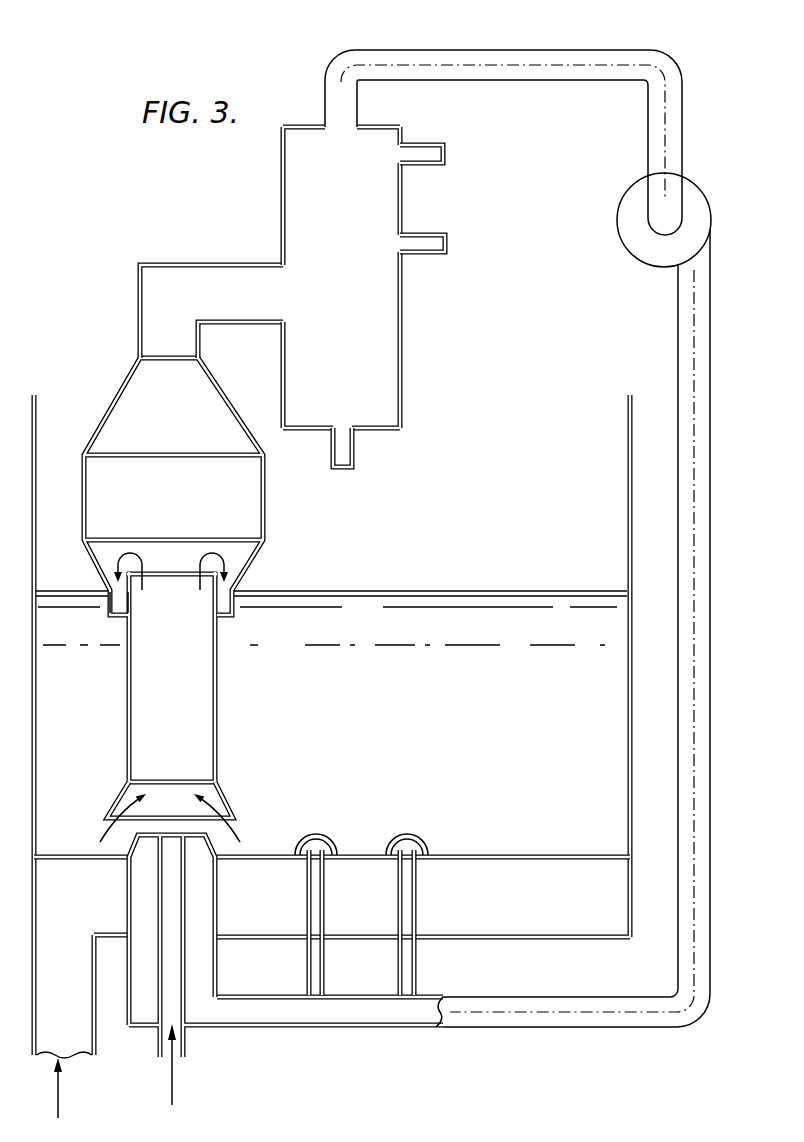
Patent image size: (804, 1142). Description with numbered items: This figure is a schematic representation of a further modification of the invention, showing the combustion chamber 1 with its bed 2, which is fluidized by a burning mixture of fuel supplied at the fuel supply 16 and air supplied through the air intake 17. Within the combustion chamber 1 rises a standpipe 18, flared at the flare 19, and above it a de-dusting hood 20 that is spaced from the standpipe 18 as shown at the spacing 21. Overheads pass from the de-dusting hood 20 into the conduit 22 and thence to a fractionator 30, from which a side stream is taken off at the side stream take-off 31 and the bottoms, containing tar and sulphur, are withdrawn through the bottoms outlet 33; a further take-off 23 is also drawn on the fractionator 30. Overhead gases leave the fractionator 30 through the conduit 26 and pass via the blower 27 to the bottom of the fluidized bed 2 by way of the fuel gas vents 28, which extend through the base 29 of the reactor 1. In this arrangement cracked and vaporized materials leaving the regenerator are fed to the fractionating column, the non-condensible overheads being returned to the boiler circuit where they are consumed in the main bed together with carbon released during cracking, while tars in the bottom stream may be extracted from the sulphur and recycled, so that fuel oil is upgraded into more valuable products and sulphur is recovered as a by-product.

The combustion chamber 1 is at (632, 738).
The bed 2 is at (610, 802).
The fuel supply 16 is at (173, 1003).
The air intake 17 is at (70, 1042).
The standpipe 18 is at (217, 712).
The flare 19 is at (223, 810).
The de-dusting hood 20 is at (265, 518).
The spacing 21 is at (120, 612).
The conduit 22 is at (215, 278).
The outlet nozzle 23 is at (432, 244).
The conduit 26 is at (475, 52).
The blower 27 is at (690, 228).
The fuel gas vents 28 is at (315, 990).
The base 29 is at (533, 857).
The fractionator 30 is at (382, 371).
The side stream take-off 31 is at (425, 148).
The bottoms outlet 33 is at (352, 450).